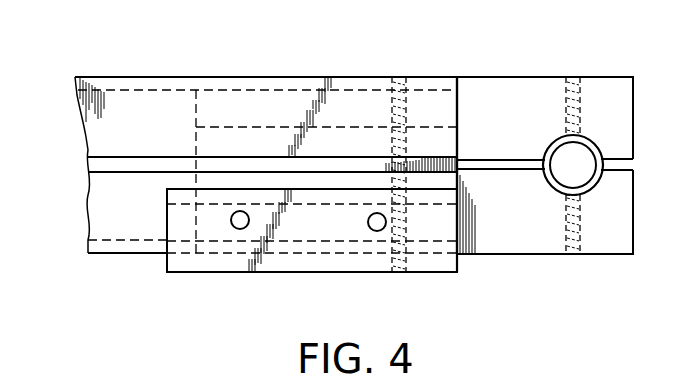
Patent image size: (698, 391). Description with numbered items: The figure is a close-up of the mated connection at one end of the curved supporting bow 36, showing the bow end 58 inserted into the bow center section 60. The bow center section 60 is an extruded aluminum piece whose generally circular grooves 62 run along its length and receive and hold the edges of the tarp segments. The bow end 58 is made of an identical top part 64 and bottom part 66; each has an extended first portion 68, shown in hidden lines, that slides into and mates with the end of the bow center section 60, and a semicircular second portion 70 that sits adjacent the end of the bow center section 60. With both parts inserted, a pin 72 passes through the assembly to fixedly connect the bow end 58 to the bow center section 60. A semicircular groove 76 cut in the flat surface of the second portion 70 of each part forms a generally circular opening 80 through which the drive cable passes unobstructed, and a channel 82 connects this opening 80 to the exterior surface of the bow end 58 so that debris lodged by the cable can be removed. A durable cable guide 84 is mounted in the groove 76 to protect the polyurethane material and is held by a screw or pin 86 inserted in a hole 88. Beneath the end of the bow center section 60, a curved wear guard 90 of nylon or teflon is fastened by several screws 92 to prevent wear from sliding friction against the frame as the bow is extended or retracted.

The curved supporting bow 36 is at (150, 262).
The bow end 58 is at (465, 95).
The bow center section 60 is at (205, 78).
The cavities or grooves 62 is at (665, 212).
The top part 64 is at (508, 90).
The bottom part 66 is at (597, 243).
The extended first portion 68 is at (270, 103).
The semicircular second portion 70 is at (487, 90).
The pin 72 is at (392, 78).
The semicircular groove 76 is at (622, 132).
The circular opening 80 is at (583, 160).
The channel 82 is at (612, 170).
The cable guide 84 is at (548, 186).
The screw or pin 86 is at (557, 240).
The hole 88 is at (573, 77).
The wear guard 90 is at (459, 272).
The screws 92 is at (235, 228).